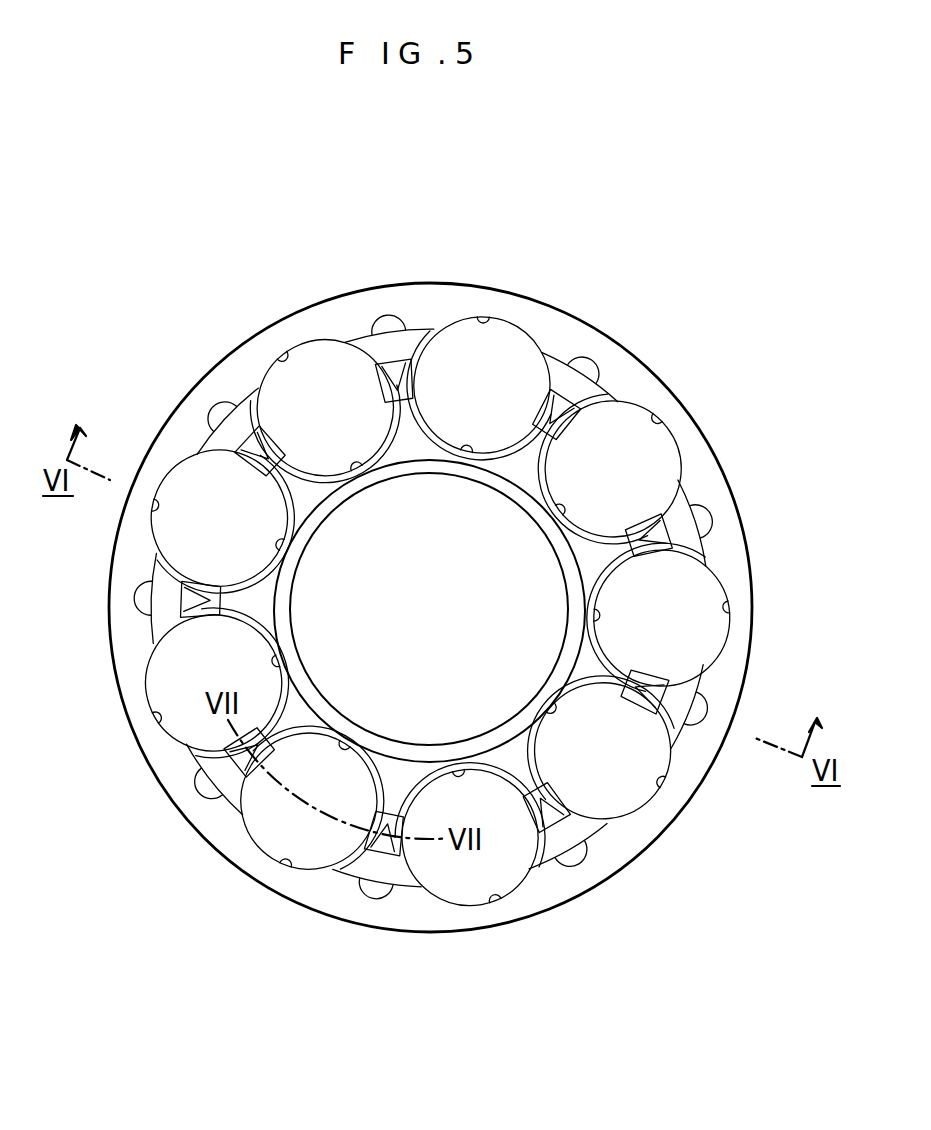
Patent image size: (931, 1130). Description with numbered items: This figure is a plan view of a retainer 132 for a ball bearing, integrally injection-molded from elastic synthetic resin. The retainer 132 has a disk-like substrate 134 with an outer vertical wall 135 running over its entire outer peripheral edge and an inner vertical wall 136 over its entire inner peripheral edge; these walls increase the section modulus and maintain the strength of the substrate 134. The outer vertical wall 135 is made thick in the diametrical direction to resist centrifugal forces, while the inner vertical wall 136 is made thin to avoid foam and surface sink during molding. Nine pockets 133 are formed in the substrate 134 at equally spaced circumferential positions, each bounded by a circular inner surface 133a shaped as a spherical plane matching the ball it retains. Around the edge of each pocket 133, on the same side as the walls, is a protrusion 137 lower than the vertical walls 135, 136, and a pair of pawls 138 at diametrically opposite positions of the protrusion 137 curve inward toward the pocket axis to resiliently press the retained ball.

The retainer 132 is at (672, 389).
The pocket 133 is at (352, 372).
The inner surface of pocket 133a is at (497, 440).
The substrate 134 is at (585, 668).
The outer vertical wall 135 is at (727, 553).
The inner vertical wall 136 is at (568, 562).
The protrusion 137 is at (692, 552).
The pawl 138 is at (272, 458).